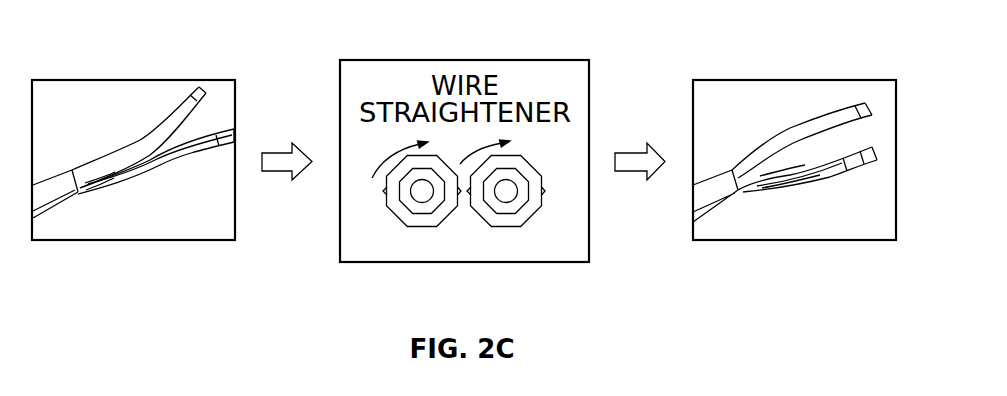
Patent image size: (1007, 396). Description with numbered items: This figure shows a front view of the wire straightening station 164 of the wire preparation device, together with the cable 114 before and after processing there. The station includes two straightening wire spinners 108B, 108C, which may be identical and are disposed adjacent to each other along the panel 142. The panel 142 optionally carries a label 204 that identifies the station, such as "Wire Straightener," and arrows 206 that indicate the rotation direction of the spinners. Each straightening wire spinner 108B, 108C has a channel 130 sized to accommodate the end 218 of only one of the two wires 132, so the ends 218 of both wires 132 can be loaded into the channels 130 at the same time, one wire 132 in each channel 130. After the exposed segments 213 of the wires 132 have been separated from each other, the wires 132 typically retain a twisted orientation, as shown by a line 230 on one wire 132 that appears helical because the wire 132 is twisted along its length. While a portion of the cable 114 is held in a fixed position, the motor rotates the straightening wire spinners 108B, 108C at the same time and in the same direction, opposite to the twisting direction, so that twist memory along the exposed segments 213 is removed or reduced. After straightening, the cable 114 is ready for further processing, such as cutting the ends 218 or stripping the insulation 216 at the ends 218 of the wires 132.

The cable 114 is at (712, 193).
The wire 132 is at (182, 110).
The end 218 is at (204, 88).
The exposed segment 213 is at (110, 160).
The line 230 is at (153, 152).
The insulation 216 is at (857, 163).
The label 204 is at (350, 83).
The wire straightening station 164 is at (569, 47).
The arrow 206 is at (385, 163).
The panel 142 is at (567, 147).
The straightening wire spinner 108B is at (412, 222).
The straightening wire spinner 108C is at (513, 218).
The channel 130 is at (434, 207).